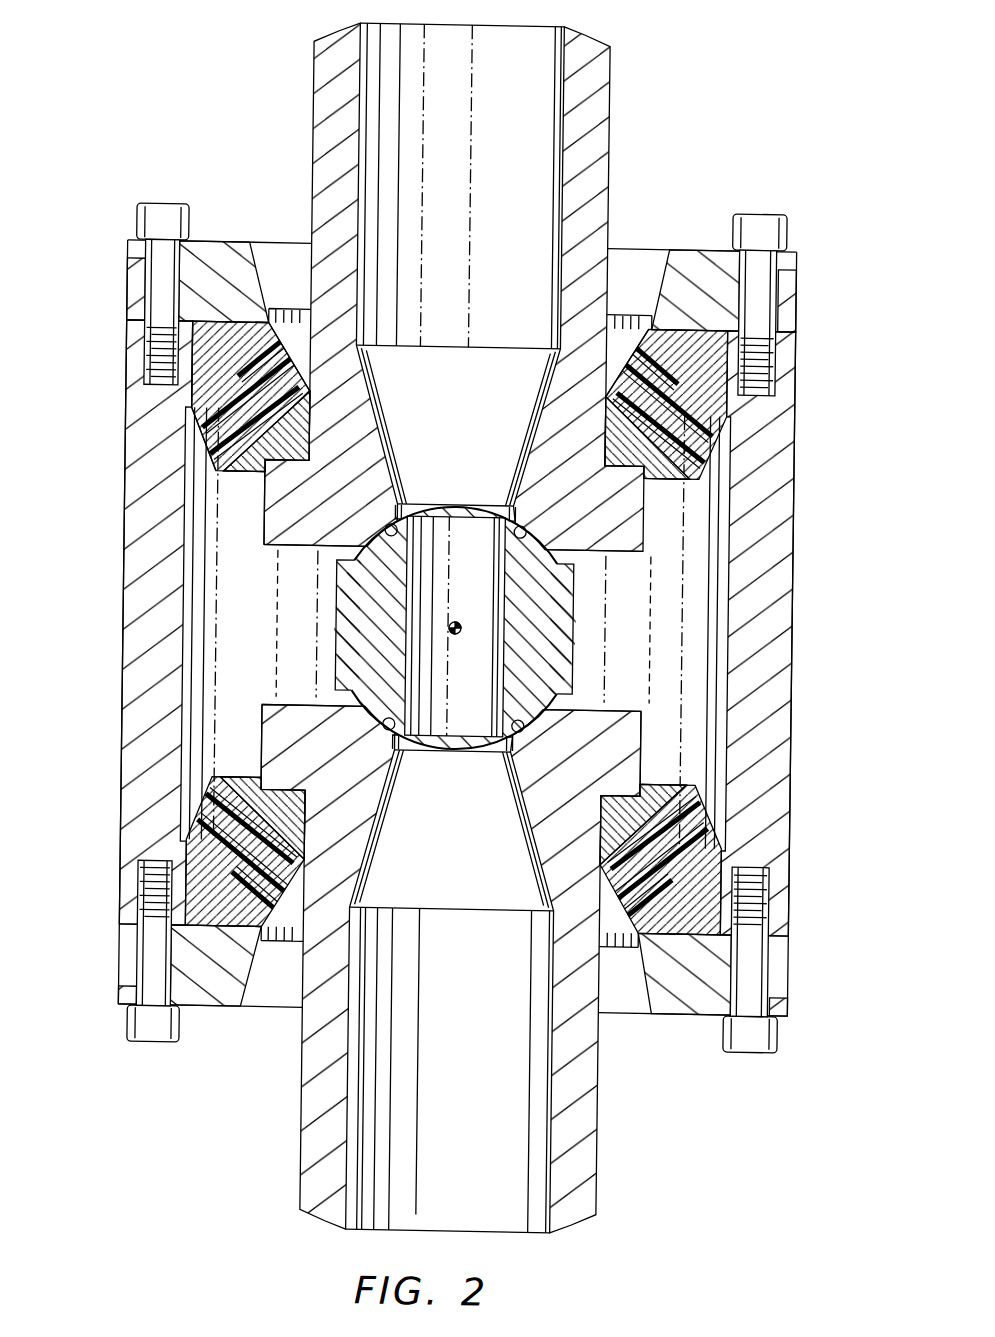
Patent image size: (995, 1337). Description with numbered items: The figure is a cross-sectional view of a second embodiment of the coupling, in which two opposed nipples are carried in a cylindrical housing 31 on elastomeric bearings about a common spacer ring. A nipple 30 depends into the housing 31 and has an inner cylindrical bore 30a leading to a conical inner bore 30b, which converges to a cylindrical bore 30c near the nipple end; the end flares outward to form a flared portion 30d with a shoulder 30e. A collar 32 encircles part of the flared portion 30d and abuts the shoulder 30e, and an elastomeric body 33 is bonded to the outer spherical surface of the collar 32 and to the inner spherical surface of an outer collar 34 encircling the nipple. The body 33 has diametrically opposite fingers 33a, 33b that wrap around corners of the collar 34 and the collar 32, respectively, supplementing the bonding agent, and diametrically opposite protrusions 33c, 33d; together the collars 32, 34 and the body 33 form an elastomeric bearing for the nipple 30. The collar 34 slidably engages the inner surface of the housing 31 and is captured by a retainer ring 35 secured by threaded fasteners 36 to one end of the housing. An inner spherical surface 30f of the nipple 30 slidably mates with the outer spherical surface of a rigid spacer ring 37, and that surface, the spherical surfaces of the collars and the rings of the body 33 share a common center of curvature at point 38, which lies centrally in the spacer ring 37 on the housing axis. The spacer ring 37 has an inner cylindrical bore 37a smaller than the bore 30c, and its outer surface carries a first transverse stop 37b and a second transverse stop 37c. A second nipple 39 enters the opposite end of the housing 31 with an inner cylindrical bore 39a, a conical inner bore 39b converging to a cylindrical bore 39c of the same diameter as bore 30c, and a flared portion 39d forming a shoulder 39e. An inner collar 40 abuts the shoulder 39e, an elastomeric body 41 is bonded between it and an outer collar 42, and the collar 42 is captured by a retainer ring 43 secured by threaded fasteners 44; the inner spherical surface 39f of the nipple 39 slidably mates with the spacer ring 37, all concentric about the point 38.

The nipple 30 is at (456, 434).
The inner cylindrical bore 30a is at (360, 118).
The conical inner bore 30b is at (394, 432).
The cylindrical bore 30c is at (397, 484).
The flared portion 30d is at (253, 547).
The shoulder 30e is at (263, 520).
The inner spherical surface 30f is at (399, 512).
The cylindrical housing 31 is at (130, 702).
The collar 32 is at (253, 478).
The elastomeric body 33 is at (454, 398).
The finger 33a is at (273, 318).
The finger 33b is at (221, 489).
The protrusion 33c is at (197, 405).
The protrusion 33d is at (344, 395).
The outer collar 34 is at (150, 346).
The retainer ring 35 is at (218, 260).
The threaded fasteners 36 is at (452, 270).
The spacer ring 37 is at (428, 627).
The inner cylindrical bore 37a is at (405, 632).
The first transverse stop 37b is at (336, 578).
The second transverse stop 37c is at (341, 690).
The point 38 is at (457, 626).
The second nipple 39 is at (456, 942).
The inner cylindrical bore 39a is at (356, 1113).
The conical inner bore 39b is at (360, 888).
The cylindrical bore 39c is at (409, 732).
The flared portion 39d is at (287, 712).
The shoulder 39e is at (270, 792).
The inner spherical surface 39f is at (399, 745).
The inner collar 40 is at (243, 796).
The elastomeric body 41 is at (453, 845).
The outer collar 42 is at (762, 870).
The retainer ring 43 is at (226, 1003).
The threaded fasteners 44 is at (474, 966).